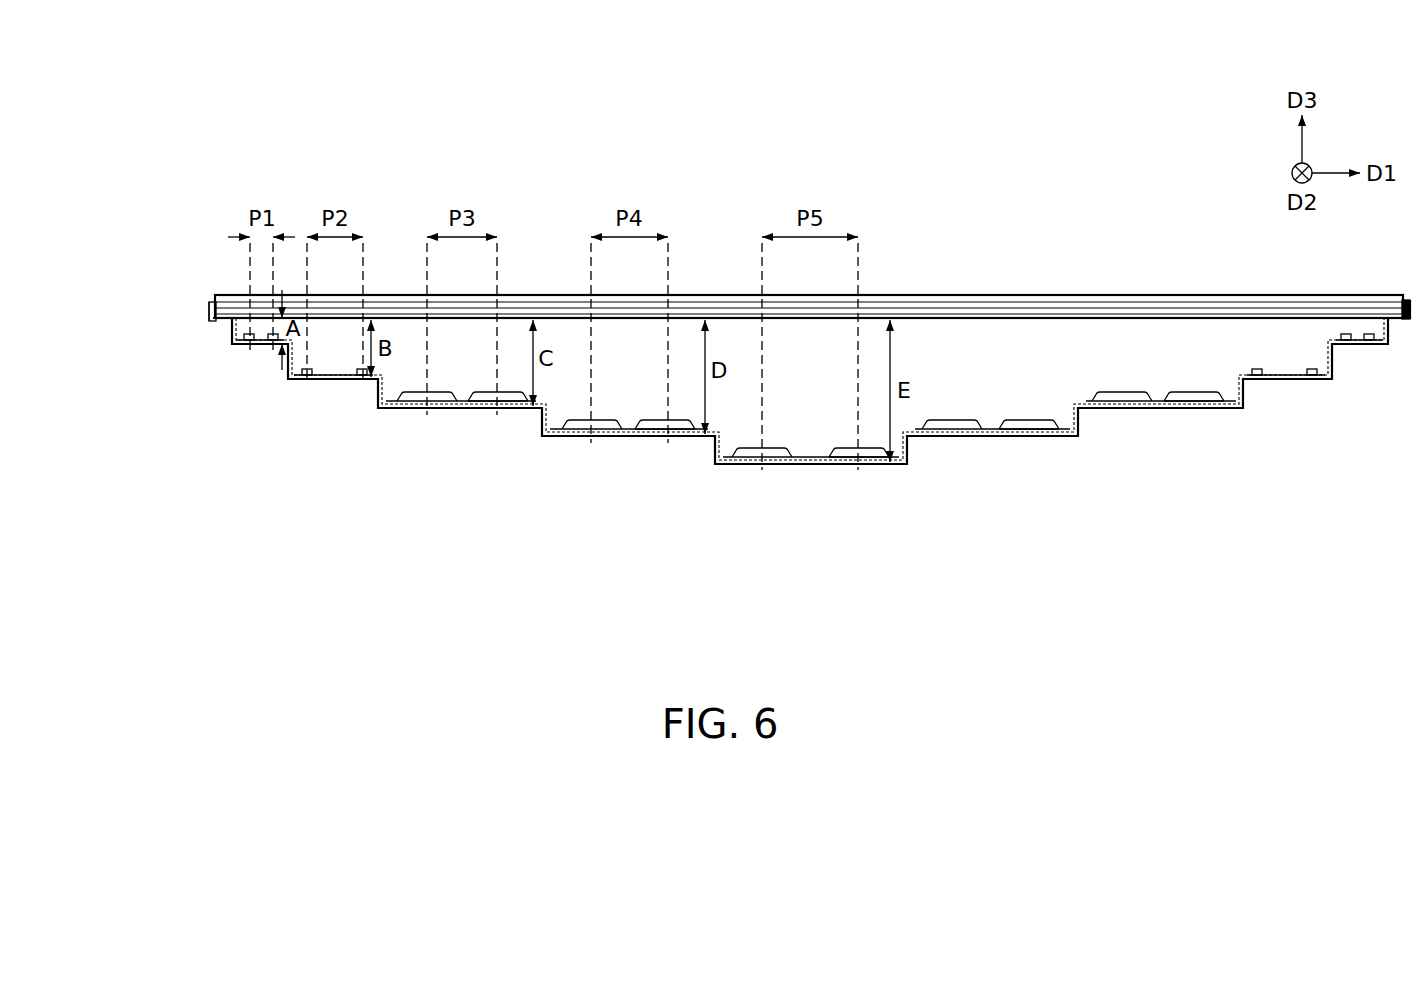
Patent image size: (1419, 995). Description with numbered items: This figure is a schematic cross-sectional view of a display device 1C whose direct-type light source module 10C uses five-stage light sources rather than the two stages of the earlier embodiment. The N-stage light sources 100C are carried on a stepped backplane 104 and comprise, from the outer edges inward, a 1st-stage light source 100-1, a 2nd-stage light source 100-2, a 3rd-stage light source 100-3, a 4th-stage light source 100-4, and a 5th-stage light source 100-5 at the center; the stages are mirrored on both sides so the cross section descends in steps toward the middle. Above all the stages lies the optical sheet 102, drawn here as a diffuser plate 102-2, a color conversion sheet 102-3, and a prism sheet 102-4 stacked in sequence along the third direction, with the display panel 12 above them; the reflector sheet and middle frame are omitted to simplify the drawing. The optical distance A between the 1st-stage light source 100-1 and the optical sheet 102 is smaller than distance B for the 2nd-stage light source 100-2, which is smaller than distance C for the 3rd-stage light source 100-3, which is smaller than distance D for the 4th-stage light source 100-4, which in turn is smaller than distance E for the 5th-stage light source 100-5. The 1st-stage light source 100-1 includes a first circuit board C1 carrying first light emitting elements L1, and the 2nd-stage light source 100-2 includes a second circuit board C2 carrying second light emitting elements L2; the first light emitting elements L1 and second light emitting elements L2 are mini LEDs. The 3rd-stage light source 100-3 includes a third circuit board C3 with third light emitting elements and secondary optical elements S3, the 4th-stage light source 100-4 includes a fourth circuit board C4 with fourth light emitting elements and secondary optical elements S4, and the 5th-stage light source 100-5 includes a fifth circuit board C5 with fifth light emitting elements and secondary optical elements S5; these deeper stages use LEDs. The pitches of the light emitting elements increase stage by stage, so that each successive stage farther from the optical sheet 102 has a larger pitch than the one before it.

The display panel 12 is at (214, 295).
The optical sheet 102 is at (116, 290).
The direct-type light source module 10C is at (127, 328).
The prism sheet 102-4 is at (212, 304).
The color conversion sheet 102-3 is at (212, 310).
The diffuser plate 102-2 is at (212, 316).
The backplane 104 is at (1406, 300).
The N-stage light sources 100C is at (208, 590).
The 1st-stage light source 100-1 is at (196, 536).
The 2nd-stage light source 100-2 is at (392, 536).
The 3rd-stage light source 100-3 is at (405, 536).
The 4th-stage light source 100-4 is at (585, 536).
The 5th-stage light source 100-5 is at (748, 536).
The display device 1C is at (1381, 608).
The first circuit board C1 is at (249, 344).
The first light emitting elements L1 is at (273, 344).
The second circuit board C2 is at (307, 379).
The second light emitting elements L2 is at (362, 379).
The third circuit board C3 is at (427, 404).
The secondary optical elements S3 is at (498, 404).
The fourth circuit board C4 is at (592, 432).
The secondary optical elements S4 is at (665, 432).
The fifth circuit board C5 is at (762, 460).
The secondary optical elements S5 is at (859, 460).